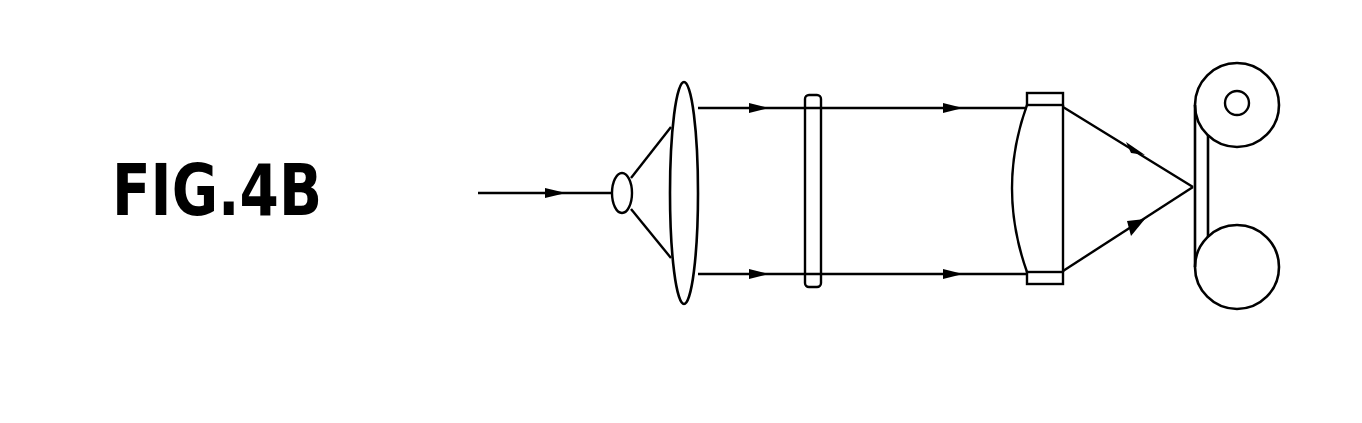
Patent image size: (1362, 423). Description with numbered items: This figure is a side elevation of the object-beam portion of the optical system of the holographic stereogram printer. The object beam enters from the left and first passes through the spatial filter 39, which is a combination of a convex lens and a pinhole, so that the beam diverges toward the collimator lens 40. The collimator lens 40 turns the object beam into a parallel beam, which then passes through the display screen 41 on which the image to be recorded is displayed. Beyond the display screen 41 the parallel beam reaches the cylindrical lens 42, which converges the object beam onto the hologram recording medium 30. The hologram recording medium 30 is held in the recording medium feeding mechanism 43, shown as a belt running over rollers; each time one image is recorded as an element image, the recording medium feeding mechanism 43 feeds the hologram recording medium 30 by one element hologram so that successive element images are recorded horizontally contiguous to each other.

The hologram recording medium 30 is at (1207, 183).
The spatial filter 39 is at (622, 190).
The collimator lens 40 is at (682, 98).
The display screen 41 is at (817, 93).
The cylindrical lens 42 is at (1042, 100).
The recording medium feeding mechanism 43 is at (1258, 82).